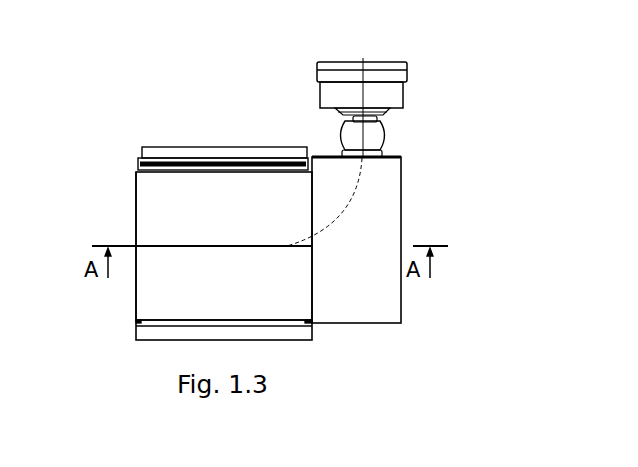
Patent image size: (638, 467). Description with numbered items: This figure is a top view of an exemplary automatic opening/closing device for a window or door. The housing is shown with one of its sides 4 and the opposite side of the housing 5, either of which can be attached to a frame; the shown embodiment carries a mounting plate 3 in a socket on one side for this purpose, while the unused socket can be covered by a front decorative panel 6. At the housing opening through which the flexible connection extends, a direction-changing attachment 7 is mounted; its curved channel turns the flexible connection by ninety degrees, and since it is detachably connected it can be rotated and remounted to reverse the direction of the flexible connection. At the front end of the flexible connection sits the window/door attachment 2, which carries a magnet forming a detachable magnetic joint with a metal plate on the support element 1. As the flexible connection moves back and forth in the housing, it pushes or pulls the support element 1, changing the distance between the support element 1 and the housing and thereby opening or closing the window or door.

The support element 1 is at (407, 68).
The window/door attachment 2 is at (403, 98).
The mounting plate 3 is at (168, 150).
The side of the housing unit 4 is at (145, 220).
The opposite side of the housing 5 is at (138, 295).
The front decorative panel 6 is at (293, 340).
The direction-changing attachment 7 is at (402, 175).